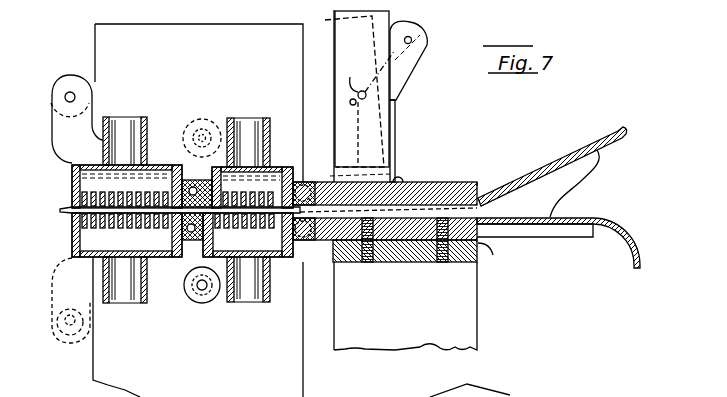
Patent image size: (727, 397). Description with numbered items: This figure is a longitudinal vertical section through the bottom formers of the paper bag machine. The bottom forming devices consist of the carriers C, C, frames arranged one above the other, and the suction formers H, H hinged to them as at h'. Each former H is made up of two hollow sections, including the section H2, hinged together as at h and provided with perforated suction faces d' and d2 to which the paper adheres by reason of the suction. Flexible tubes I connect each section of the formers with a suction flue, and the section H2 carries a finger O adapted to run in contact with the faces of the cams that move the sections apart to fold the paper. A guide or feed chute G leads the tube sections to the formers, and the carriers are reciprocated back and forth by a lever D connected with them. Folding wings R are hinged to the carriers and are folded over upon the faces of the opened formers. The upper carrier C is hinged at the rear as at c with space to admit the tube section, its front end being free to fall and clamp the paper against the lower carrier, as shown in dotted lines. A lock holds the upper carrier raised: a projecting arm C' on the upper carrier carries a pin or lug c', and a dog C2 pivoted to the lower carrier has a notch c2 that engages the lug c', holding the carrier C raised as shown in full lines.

The flexible tubes I is at (54, 103).
The finger O is at (208, 119).
The suction former H is at (175, 165).
The hollow section of former H2 is at (250, 212).
The hinge of former sections h is at (197, 204).
The hinge of former to carrier h' is at (309, 214).
The perforated suction face d' is at (246, 206).
The perforated suction face d2 is at (244, 196).
The carrier C is at (466, 216).
The projecting arm C' is at (349, 89).
The dog C2 is at (414, 56).
The hinge of upper carrier c is at (494, 170).
The pin or lug c' is at (372, 83).
The notch c2 is at (353, 72).
The guide or feed chute G is at (558, 169).
The lever D is at (405, 306).
The folding wings R is at (302, 358).